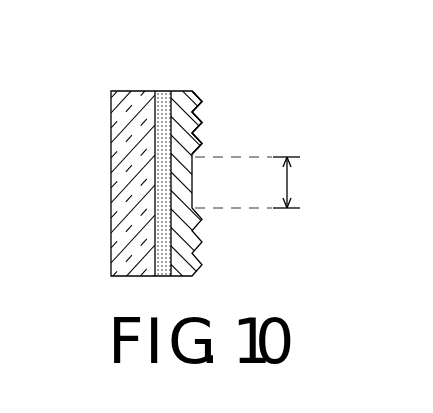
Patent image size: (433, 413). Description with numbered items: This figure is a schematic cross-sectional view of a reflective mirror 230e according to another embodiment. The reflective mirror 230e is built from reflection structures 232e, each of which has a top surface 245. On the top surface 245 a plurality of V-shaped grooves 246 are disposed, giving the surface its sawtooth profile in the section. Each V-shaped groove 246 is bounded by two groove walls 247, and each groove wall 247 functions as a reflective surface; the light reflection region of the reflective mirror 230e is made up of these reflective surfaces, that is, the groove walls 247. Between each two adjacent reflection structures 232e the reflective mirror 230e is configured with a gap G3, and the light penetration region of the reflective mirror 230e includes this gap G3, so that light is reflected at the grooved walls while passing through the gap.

The reflective mirror 230e is at (383, 302).
The reflection structure 232e is at (202, 102).
The top surface 245 is at (204, 102).
The V-shaped groove 246 is at (204, 117).
The groove wall 247 is at (197, 144).
The gap G3 is at (269, 182).